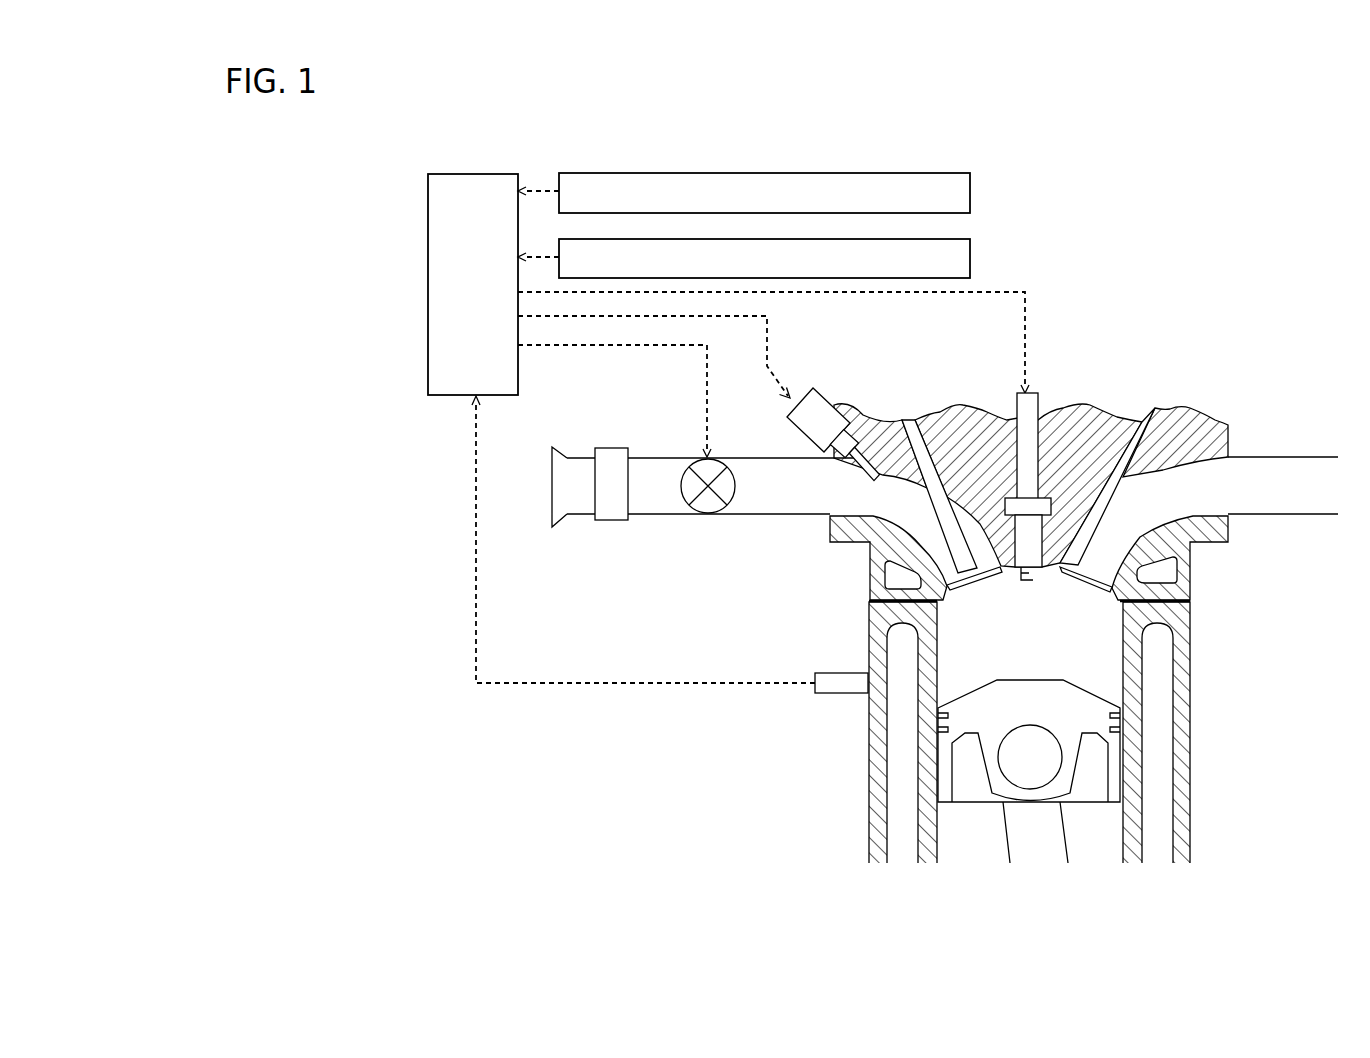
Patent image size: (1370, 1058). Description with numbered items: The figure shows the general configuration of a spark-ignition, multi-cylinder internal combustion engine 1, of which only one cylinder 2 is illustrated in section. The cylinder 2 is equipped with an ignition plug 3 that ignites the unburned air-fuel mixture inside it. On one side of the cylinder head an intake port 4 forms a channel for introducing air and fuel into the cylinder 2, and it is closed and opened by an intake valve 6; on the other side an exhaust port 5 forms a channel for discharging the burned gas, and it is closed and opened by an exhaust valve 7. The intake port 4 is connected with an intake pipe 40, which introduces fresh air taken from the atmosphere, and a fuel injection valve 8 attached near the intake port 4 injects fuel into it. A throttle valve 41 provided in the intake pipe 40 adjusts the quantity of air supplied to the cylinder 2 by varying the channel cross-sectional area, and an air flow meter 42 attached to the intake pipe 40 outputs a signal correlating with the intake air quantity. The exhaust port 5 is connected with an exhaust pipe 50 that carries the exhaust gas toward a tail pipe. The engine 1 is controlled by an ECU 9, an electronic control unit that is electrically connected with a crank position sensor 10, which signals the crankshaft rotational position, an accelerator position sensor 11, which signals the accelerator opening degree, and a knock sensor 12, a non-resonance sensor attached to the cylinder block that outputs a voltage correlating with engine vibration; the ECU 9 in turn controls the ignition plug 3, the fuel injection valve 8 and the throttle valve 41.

The internal combustion engine 1 is at (1228, 598).
The cylinder 2 is at (1123, 641).
The ignition plug 3 is at (1040, 394).
The intake port 4 is at (868, 512).
The exhaust port 5 is at (1197, 514).
The intake valve 6 is at (963, 590).
The exhaust valve 7 is at (1087, 582).
The fuel injection valve 8 is at (815, 390).
The ECU 9 is at (461, 174).
The crank position sensor 10 is at (970, 191).
The accelerator position sensor 11 is at (970, 257).
The knock sensor 12 is at (837, 694).
The intake pipe 40 is at (770, 514).
The throttle valve 41 is at (704, 458).
The air flow meter 42 is at (615, 522).
The exhaust pipe 50 is at (1292, 457).